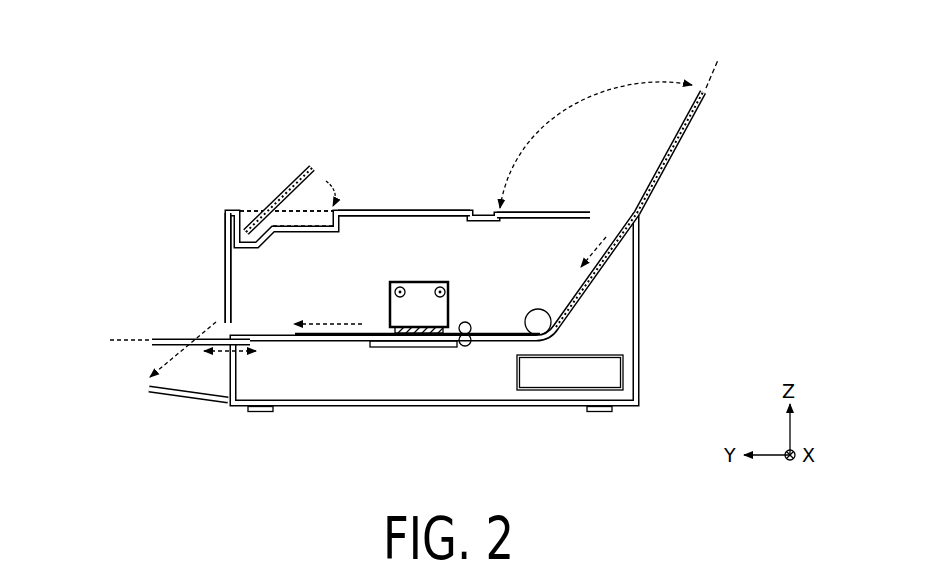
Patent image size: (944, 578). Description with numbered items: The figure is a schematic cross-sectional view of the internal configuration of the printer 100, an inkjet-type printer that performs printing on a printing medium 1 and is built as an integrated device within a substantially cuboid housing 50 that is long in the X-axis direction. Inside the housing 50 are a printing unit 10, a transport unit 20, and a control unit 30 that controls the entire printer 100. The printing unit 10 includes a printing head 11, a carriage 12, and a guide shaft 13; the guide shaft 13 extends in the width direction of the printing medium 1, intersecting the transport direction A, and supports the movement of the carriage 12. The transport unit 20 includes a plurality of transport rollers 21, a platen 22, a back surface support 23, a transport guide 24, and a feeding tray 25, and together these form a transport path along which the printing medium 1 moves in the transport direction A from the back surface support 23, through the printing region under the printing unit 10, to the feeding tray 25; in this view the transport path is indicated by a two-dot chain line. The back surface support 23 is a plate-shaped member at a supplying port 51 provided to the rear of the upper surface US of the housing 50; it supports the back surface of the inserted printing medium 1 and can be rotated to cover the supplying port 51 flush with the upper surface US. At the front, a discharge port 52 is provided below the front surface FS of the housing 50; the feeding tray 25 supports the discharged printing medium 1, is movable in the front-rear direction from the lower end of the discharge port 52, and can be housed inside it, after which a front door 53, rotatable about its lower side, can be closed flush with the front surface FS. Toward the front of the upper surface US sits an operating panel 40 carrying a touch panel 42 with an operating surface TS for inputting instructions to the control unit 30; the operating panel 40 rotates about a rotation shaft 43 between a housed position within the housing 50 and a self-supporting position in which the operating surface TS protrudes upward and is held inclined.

The printing medium 1 is at (137, 340).
The printing unit 10 is at (385, 284).
The printing head 11 is at (400, 327).
The carriage 12 is at (421, 283).
The guide shaft 13 is at (397, 282).
The transport unit 20 is at (568, 328).
The transport rollers 21 is at (464, 322).
The platen 22 is at (417, 346).
The back surface support 23 is at (684, 143).
The transport guide 24 is at (330, 343).
The feeding tray 25 is at (216, 322).
The control unit 30 is at (615, 370).
The operating panel 40 is at (269, 173).
The touch panel 42 is at (284, 180).
The rotation shaft 43 is at (262, 217).
The housing 50 is at (656, 293).
The supplying port 51 is at (610, 220).
The discharge port 52 is at (229, 330).
The front door 53 is at (175, 398).
The printer 100 is at (225, 99).
The transport direction A is at (450, 279).
The upper surface US is at (430, 208).
The front surface FS is at (220, 274).
The operating surface TS is at (323, 176).